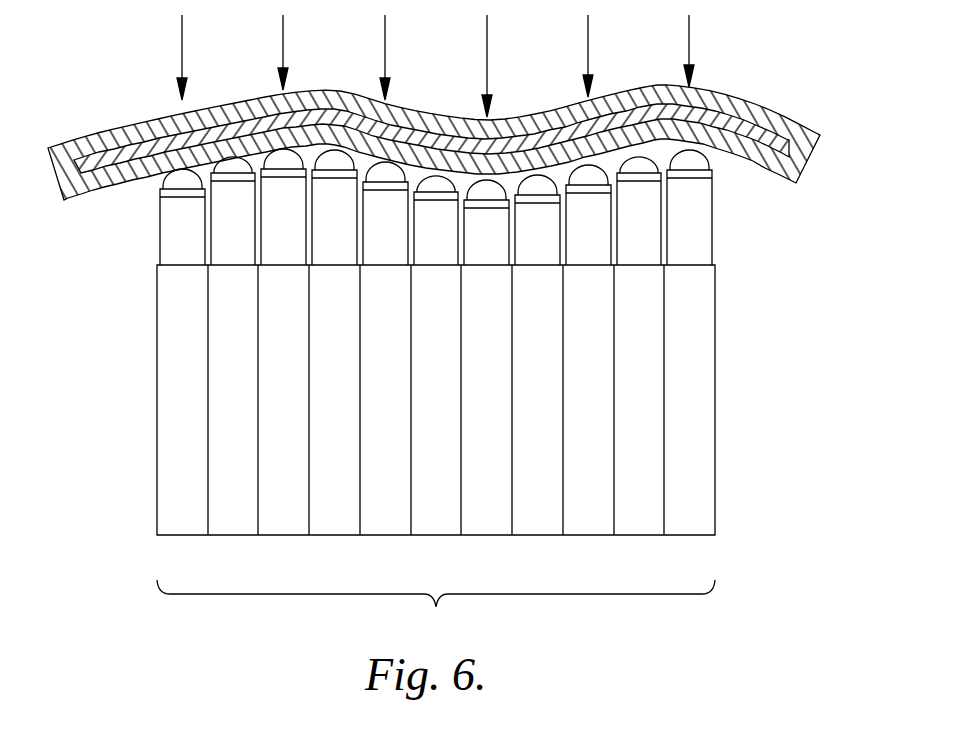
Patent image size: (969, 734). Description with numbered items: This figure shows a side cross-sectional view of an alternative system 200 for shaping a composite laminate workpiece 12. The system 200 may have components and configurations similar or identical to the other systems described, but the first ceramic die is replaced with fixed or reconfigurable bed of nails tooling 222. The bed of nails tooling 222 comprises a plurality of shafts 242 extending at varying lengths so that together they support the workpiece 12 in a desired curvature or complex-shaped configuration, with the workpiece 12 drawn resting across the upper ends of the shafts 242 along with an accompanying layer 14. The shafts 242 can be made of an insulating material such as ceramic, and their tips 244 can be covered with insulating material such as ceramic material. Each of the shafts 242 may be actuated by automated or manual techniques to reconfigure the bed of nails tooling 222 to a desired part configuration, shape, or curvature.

The workpiece 12 is at (153, 147).
The cover layer 14 is at (434, 134).
The system 200 is at (504, 342).
The bed of nails tooling 222 is at (436, 611).
The shafts 242 is at (693, 330).
The tips 244 is at (692, 163).